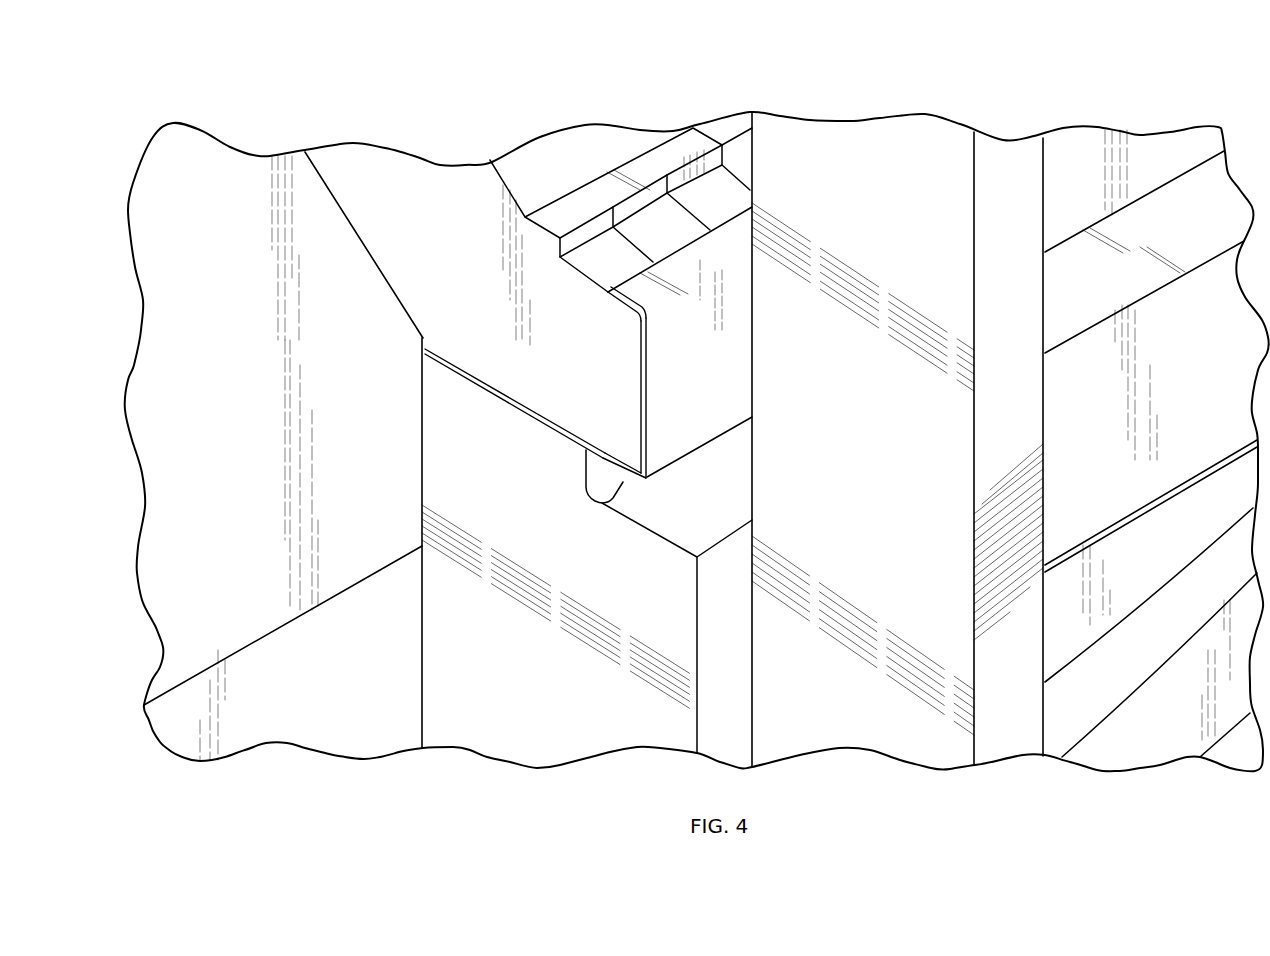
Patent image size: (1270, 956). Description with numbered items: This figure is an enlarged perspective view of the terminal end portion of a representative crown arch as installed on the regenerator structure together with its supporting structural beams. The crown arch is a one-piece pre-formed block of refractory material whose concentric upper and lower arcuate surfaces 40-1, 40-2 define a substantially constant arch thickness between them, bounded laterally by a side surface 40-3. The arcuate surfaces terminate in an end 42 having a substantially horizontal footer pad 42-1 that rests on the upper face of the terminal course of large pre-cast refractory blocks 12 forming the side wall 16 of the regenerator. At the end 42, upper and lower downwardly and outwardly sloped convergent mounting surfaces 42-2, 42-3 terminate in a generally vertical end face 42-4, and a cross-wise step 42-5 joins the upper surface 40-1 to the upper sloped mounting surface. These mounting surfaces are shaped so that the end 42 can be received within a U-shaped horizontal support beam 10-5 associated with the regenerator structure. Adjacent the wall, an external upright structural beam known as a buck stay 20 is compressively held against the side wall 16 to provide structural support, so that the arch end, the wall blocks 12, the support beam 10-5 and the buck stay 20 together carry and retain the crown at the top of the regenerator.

The pre-cast refractory blocks 12 is at (553, 735).
The side wall 16 is at (1223, 397).
The buck stays 20 is at (873, 492).
The U-shaped horizontal support beam 10-5 is at (722, 392).
The upper arcuate surface 40-1 is at (573, 143).
The lower arcuate surface 40-2 is at (350, 217).
The side surface 40-3 is at (472, 254).
The end 42 is at (543, 310).
The footer pad 42-1 is at (420, 348).
The upper sloped mounting surface 42-2 is at (598, 268).
The lower sloped mounting surface 42-3 is at (622, 483).
The vertical end face 42-4 is at (652, 412).
The cross-wise step 42-5 is at (577, 210).